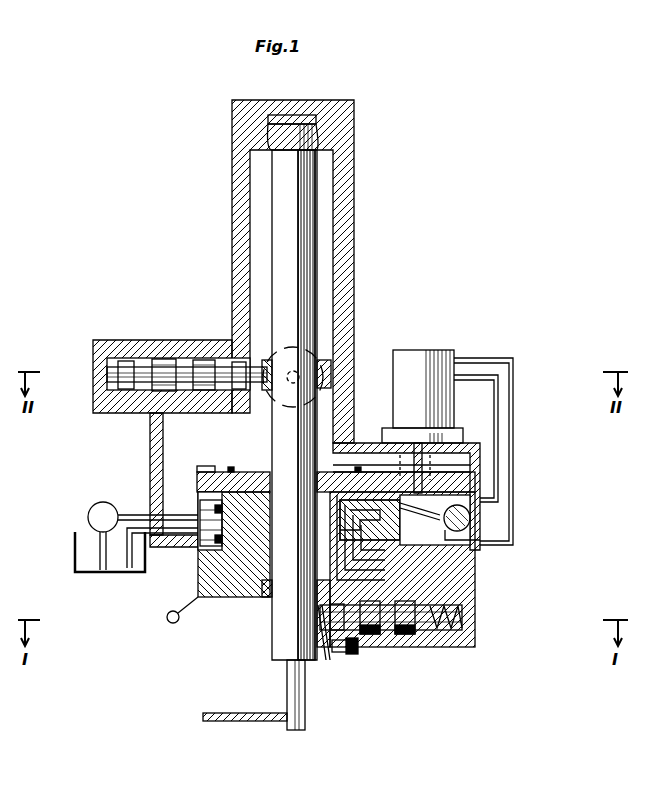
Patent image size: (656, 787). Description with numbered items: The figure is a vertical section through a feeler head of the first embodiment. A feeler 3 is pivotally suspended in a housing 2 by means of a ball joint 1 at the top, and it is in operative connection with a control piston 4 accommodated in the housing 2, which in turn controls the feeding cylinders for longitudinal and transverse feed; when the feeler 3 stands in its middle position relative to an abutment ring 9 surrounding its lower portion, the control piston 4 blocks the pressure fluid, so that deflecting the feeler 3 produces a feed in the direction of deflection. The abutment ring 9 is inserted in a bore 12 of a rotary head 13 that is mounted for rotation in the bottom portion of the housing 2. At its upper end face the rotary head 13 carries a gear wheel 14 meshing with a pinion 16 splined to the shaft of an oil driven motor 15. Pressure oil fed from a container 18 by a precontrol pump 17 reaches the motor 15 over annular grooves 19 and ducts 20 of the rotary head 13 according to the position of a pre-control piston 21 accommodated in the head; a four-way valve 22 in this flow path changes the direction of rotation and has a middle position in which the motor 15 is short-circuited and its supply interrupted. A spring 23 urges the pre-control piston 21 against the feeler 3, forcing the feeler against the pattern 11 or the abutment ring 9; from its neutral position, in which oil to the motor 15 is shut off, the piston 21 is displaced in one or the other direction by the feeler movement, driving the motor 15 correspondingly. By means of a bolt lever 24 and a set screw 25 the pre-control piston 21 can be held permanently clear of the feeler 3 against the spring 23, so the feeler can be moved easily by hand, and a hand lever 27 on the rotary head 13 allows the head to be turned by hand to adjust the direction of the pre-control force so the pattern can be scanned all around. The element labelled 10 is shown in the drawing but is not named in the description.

The ball joint 1 is at (292, 135).
The housing 2 is at (240, 170).
The feeler 3 is at (312, 200).
The control piston 4 is at (192, 358).
The abutment ring 9 is at (264, 598).
The drive shaft 10 is at (265, 708).
The pattern 11 is at (217, 722).
The bore 12 is at (267, 472).
The rotary head 13 is at (233, 587).
The gear wheel 14 is at (350, 472).
The oil driven motor 15 is at (418, 368).
The pinion 16 is at (422, 470).
The precontrol pump 17 is at (98, 512).
The container 18 is at (85, 557).
The annular grooves 19 is at (212, 530).
The ducts 20 is at (425, 645).
The pre-control piston 21 is at (403, 640).
The four-way valve 22 is at (470, 518).
The spring 23 is at (465, 618).
The bolt lever 24 is at (328, 662).
The set screw 25 is at (356, 654).
The hand lever 27 is at (167, 616).